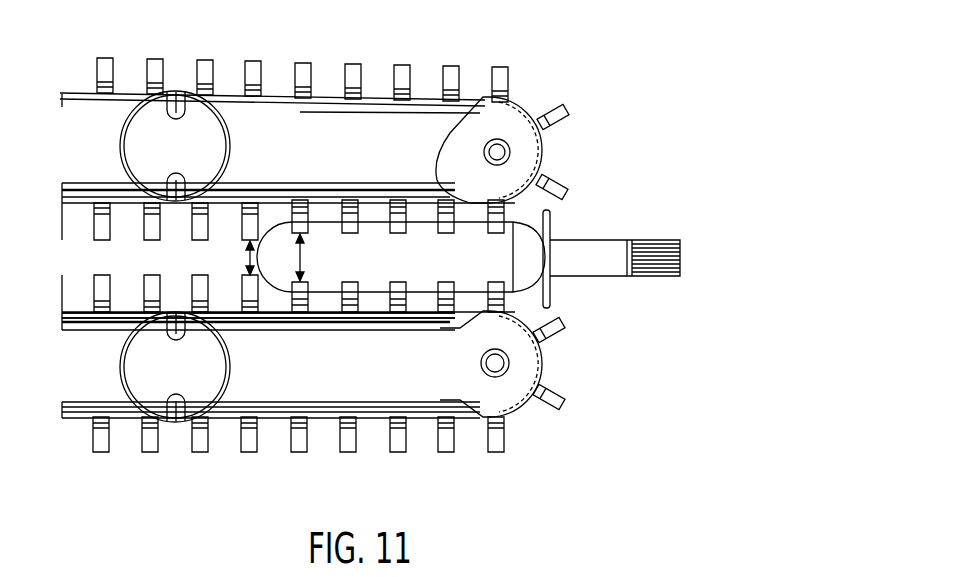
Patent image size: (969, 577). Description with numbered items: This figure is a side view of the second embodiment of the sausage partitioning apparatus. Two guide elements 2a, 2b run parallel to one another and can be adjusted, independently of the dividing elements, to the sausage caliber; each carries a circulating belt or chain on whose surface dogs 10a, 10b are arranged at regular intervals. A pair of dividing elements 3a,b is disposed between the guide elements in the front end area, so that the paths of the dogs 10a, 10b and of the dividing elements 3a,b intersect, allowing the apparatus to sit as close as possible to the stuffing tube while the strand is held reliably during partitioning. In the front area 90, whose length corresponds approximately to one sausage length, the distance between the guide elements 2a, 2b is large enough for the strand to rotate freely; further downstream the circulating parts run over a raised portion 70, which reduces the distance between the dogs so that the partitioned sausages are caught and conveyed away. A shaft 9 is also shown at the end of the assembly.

The guide element 2a is at (426, 71).
The dog 10a is at (447, 217).
The guide element 2b is at (422, 445).
The dog 10b is at (447, 450).
The front area 90 is at (402, 270).
The dividing elements 3a,b is at (552, 236).
The drive shaft 9 is at (665, 278).
The raised portion 70 is at (237, 317).